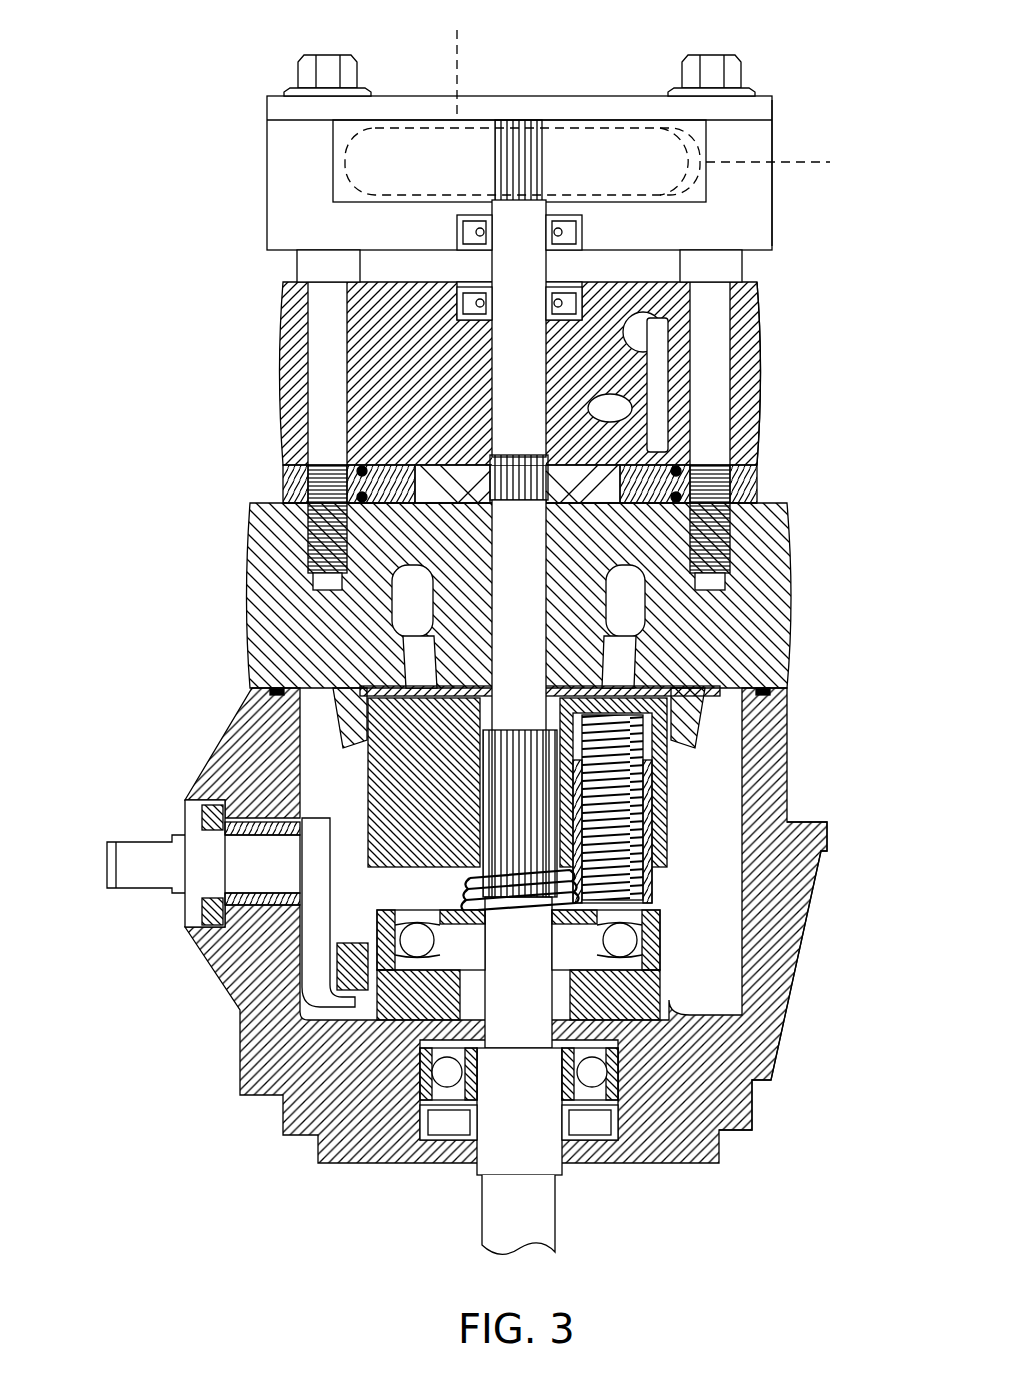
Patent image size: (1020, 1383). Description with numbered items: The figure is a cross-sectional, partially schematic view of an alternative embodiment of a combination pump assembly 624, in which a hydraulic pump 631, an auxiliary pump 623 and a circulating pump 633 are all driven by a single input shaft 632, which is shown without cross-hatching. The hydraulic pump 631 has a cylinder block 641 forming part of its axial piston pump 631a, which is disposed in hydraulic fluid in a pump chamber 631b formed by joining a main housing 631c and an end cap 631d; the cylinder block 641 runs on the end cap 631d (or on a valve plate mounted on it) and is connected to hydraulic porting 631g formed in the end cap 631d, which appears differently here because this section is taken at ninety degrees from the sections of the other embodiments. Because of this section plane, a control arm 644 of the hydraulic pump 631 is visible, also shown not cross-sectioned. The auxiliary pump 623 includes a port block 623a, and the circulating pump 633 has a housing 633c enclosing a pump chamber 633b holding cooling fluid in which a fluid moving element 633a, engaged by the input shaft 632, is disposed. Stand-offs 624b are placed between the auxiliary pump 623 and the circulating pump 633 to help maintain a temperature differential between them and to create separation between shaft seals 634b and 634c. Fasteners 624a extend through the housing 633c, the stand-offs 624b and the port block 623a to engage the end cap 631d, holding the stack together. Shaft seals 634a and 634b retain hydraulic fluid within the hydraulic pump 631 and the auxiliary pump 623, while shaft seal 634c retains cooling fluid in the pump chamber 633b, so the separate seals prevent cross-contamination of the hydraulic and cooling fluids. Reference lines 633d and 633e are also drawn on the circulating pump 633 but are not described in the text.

The combination pump assembly 624 is at (448, 303).
The fasteners 624a is at (325, 55).
The stand-offs 624b is at (297, 266).
The circulating pump 633 is at (522, 139).
The fluid moving element 633a is at (614, 130).
The pump chamber 633b is at (644, 130).
The housing 633c is at (772, 138).
The center axis line 633d is at (457, 42).
The reference line 633e is at (815, 165).
The shaft seal 634a is at (590, 1140).
The shaft seal 634b is at (566, 295).
The shaft seal 634c is at (457, 232).
The auxiliary pump 623 is at (517, 373).
The port block 623a is at (757, 375).
The hydraulic pump 631 is at (499, 909).
The axial piston pump 631a is at (335, 790).
The pump chamber 631b is at (695, 785).
The main housing 631c is at (770, 905).
The end cap 631d is at (561, 625).
The hydraulic porting 631g is at (630, 607).
The cylinder block 641 is at (447, 802).
The control arm 644 is at (138, 893).
The input shaft 632 is at (558, 1230).